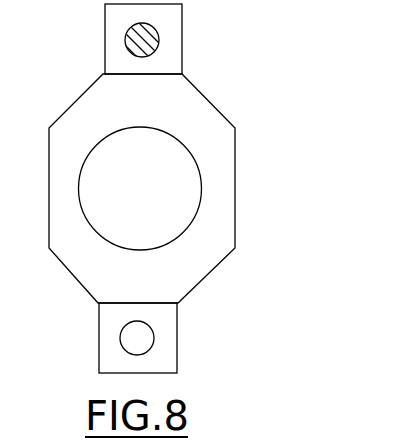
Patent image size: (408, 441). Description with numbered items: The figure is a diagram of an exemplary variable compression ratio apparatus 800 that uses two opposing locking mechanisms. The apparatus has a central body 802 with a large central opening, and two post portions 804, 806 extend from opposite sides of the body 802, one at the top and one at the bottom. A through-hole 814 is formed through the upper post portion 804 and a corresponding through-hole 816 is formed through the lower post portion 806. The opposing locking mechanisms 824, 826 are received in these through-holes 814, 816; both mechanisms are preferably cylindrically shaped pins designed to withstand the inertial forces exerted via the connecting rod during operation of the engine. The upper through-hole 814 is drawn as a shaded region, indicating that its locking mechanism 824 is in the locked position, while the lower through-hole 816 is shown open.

The variable compression ratio apparatus 800 is at (330, 54).
The body of the variable compression ratio apparatus 802 is at (235, 230).
The post portion 804 is at (182, 40).
The post portion 806 is at (177, 370).
The through-hole 814 is at (125, 44).
The through-hole 816 is at (120, 338).
The locking mechanism 824 is at (152, 28).
The locking mechanism 826 is at (150, 333).